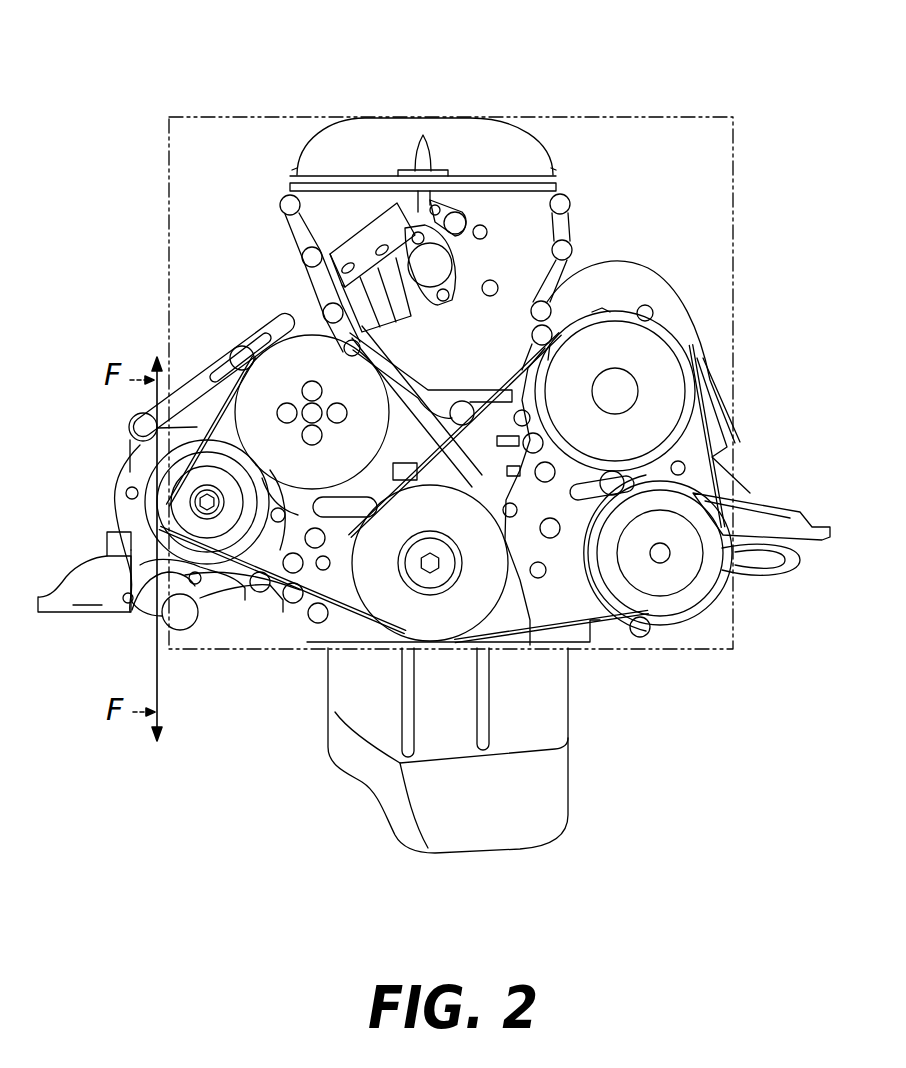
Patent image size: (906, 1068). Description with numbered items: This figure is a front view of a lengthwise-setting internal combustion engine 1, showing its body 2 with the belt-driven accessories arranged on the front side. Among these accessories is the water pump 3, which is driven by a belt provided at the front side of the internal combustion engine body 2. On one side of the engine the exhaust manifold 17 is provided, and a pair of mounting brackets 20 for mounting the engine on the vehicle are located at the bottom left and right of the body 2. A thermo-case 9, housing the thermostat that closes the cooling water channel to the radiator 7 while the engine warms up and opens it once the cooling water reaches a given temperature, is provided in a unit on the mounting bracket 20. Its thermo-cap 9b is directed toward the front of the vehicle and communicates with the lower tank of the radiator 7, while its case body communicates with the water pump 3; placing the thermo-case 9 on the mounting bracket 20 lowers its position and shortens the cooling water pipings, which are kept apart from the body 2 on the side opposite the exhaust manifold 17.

The internal combustion engine 1 is at (638, 80).
The internal combustion engine body 2 is at (570, 688).
The water pump 3 is at (305, 350).
The radiator 7 is at (246, 117).
The thermo-case 9 is at (146, 622).
The thermo-cap 9b is at (187, 620).
The exhaust manifold 17 is at (615, 292).
The mounting bracket 20 is at (58, 614).